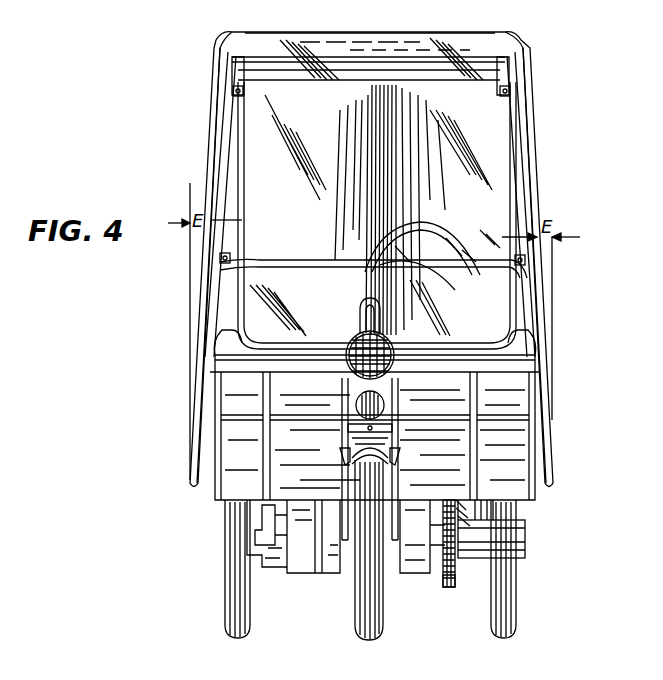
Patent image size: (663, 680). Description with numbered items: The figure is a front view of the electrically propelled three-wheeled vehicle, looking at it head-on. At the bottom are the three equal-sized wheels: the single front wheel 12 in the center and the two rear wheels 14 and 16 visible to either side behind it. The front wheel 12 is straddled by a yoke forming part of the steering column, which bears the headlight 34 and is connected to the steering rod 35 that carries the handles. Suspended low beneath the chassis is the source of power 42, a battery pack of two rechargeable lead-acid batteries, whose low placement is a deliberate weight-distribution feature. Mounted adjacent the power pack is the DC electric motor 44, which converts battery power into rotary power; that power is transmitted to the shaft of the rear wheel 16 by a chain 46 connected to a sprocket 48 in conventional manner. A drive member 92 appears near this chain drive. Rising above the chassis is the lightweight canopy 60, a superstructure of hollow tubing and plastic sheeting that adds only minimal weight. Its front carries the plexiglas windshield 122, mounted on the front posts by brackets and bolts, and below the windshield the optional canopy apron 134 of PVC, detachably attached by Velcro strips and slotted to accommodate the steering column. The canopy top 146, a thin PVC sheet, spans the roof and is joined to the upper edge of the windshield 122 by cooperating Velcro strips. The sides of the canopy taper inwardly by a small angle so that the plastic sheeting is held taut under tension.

The front wheel 12 is at (381, 630).
The rear wheel 14 is at (233, 608).
The rear wheel 16 is at (513, 608).
The headlight 34 is at (350, 357).
The steering rod 35 is at (400, 270).
The source of power 42 is at (327, 568).
The DC electric motor 44 is at (513, 535).
The chain 46 is at (450, 500).
The sprocket 48 is at (445, 583).
The canopy 60 is at (541, 67).
The drive chain 92 is at (460, 500).
The windshield 122 is at (248, 146).
The canopy apron 134 is at (248, 326).
The canopy top 146 is at (277, 45).